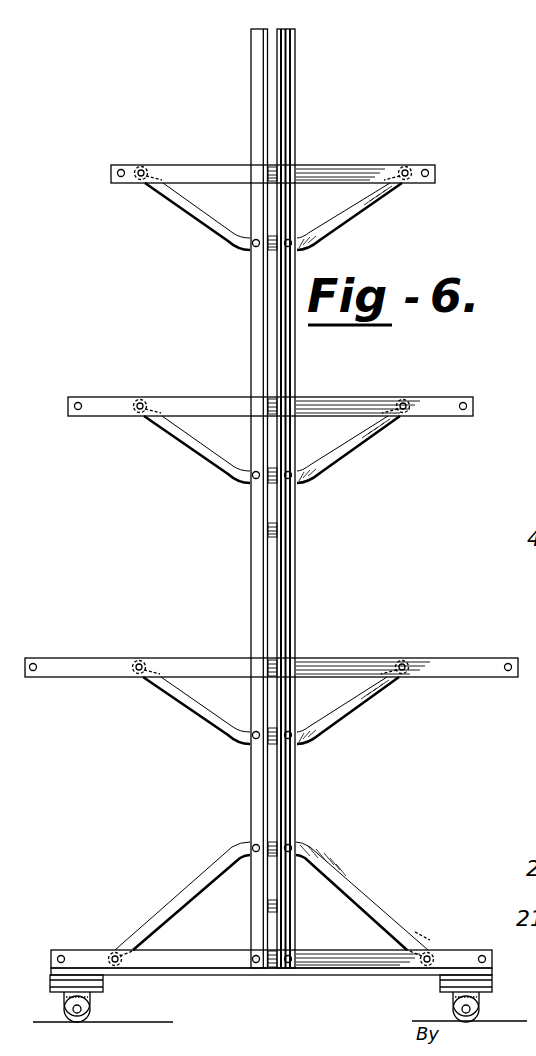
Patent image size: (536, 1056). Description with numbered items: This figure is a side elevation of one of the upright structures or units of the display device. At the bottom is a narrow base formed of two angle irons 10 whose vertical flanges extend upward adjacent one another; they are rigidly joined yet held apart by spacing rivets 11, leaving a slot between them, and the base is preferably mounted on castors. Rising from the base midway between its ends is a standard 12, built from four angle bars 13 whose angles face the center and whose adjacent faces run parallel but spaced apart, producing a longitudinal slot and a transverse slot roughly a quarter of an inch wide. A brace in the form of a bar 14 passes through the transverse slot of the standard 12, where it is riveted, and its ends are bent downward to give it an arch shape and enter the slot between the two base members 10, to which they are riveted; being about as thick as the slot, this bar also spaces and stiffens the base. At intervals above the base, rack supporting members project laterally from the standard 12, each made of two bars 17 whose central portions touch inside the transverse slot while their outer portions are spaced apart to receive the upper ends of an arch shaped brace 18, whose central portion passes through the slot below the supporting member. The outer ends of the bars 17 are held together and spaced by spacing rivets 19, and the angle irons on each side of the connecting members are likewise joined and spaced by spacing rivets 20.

The angle irons 10 is at (199, 963).
The spacing rivets 11 is at (61, 955).
The standard 12 is at (311, 498).
The angle bars 13 is at (256, 88).
The bar 14 is at (338, 862).
The bars 17 is at (347, 174).
The arch shaped brace 18 is at (367, 207).
The spacing rivets 19 is at (124, 171).
The spacing rivets 20 is at (273, 160).